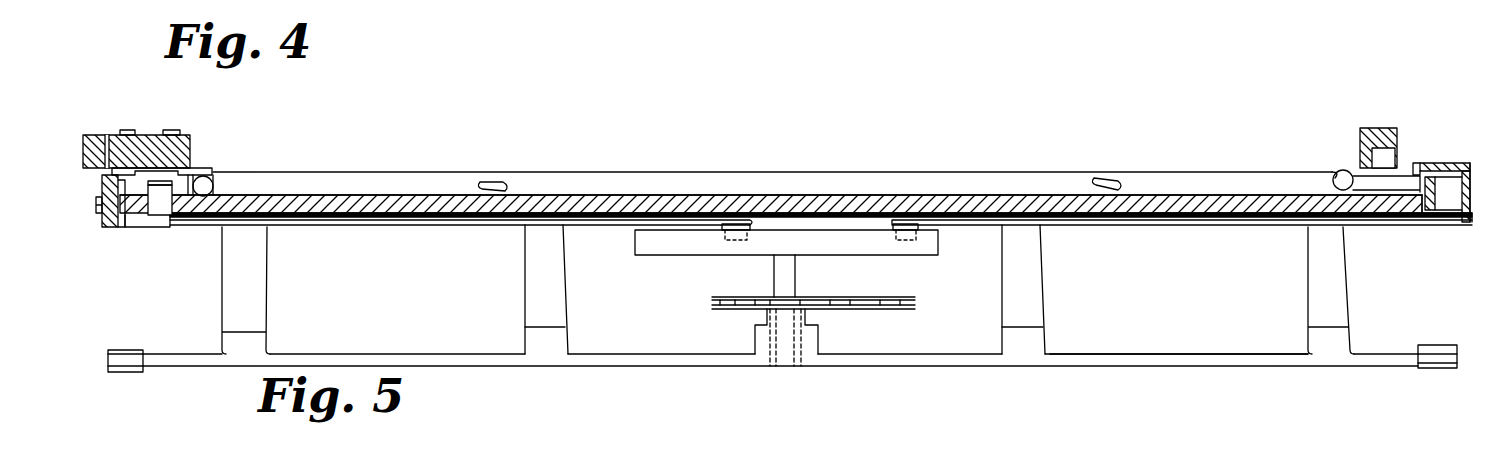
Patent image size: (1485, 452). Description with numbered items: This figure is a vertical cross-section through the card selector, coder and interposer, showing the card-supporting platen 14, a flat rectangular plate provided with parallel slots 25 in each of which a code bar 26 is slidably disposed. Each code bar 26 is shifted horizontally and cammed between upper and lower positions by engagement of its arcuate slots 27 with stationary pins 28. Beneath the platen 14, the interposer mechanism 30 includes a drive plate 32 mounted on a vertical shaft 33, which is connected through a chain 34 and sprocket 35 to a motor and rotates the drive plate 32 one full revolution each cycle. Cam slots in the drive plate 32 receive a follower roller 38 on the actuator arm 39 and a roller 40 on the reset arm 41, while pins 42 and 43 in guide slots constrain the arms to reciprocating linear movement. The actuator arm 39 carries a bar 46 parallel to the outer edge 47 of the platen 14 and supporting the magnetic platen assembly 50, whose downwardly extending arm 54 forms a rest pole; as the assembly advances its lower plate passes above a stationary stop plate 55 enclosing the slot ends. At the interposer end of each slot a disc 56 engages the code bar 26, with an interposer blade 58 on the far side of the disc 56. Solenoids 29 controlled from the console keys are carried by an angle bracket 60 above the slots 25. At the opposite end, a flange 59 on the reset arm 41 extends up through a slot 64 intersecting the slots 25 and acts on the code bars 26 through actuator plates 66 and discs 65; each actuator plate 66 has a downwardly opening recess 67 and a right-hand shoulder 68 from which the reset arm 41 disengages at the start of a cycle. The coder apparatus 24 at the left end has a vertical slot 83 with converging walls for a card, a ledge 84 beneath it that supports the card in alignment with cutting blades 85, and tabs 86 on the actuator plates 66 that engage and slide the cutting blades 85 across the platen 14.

The card-supporting platen 14 is at (680, 205).
The coder apparatus 24 is at (152, 90).
The parallel slots 25 is at (630, 195).
The code bar 26 is at (612, 173).
The arcuate slots 27 is at (502, 185).
The stationary pins 28 is at (486, 180).
The solenoids 29 is at (1386, 160).
The interposer mechanism 30 is at (1434, 66).
The drive plate 32 is at (848, 255).
The vertical shaft 33 is at (780, 270).
The chain 34 is at (888, 310).
The sprocket 35 is at (768, 320).
The follower roller 38 is at (925, 247).
The actuator arm 39 is at (1115, 228).
The roller 40 is at (722, 246).
The reset arm 41 is at (470, 224).
The pin 42 is at (545, 224).
The pin 43 is at (1025, 219).
The bar 46 is at (1464, 210).
The outer edge 47 is at (1428, 208).
The magnetic platen assembly 50 is at (1452, 158).
The downwardly extending arm 54 is at (1415, 163).
The stationary stop plate 55 is at (1446, 205).
The disc 56 is at (1334, 178).
The interposer blade 58 is at (1384, 213).
The flange 59 is at (165, 196).
The angle bracket 60 is at (1358, 128).
The slot 64 is at (150, 205).
The disc 65 is at (213, 185).
The actuator plate 66 is at (160, 180).
The downwardly opening recess 67 is at (125, 222).
The right-hand shoulder 68 is at (205, 165).
The vertical slot 83 is at (106, 135).
The ledge 84 is at (96, 182).
The cutting blades 85 is at (178, 145).
The tabs 86 is at (198, 150).